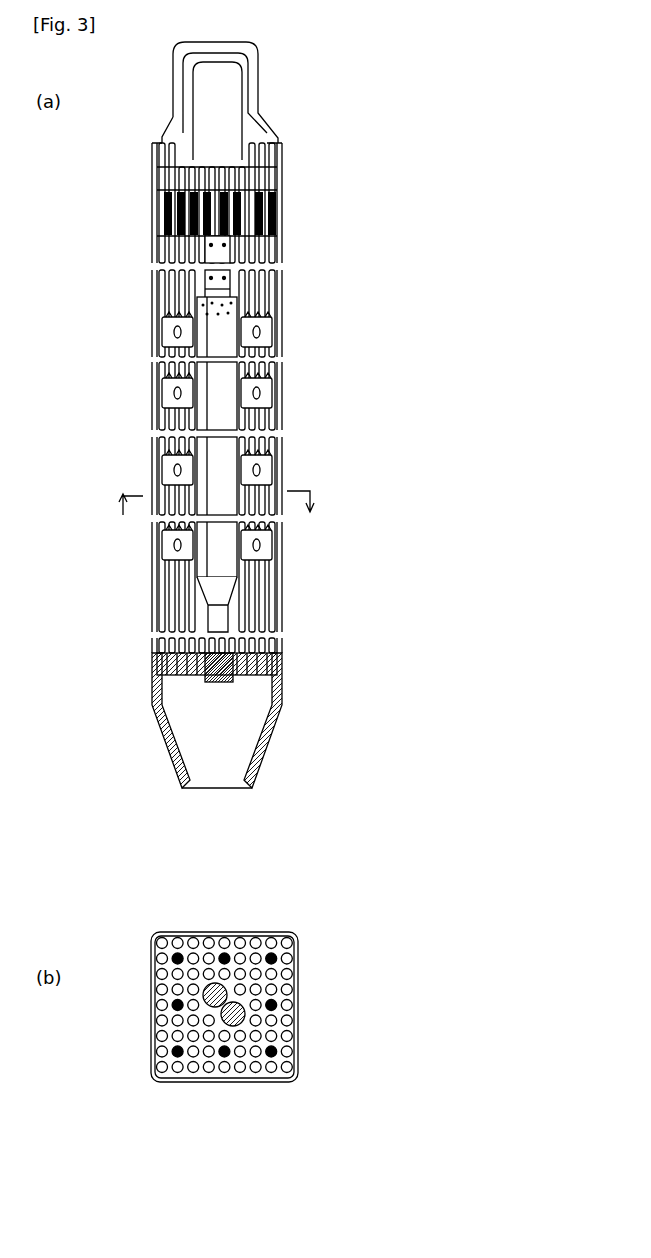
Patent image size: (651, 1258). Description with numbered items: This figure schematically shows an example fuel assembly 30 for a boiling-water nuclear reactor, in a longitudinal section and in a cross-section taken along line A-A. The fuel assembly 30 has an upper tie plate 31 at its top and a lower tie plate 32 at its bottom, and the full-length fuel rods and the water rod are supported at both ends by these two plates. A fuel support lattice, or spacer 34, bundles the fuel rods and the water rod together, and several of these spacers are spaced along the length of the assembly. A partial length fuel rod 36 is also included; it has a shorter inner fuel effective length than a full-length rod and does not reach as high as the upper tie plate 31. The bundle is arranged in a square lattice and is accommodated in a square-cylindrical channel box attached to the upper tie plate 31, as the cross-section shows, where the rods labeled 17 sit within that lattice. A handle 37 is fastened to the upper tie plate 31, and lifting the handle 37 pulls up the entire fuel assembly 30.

The fuel assembly 30 is at (393, 213).
The handle 37 is at (266, 77).
The upper tie plate 31 is at (258, 173).
The lower tie plate 32 is at (263, 663).
The fuel support lattice (spacer) 34 is at (264, 393).
The partial length fuel rod 36 is at (260, 497).
The corner fuel rod 17 is at (279, 938).